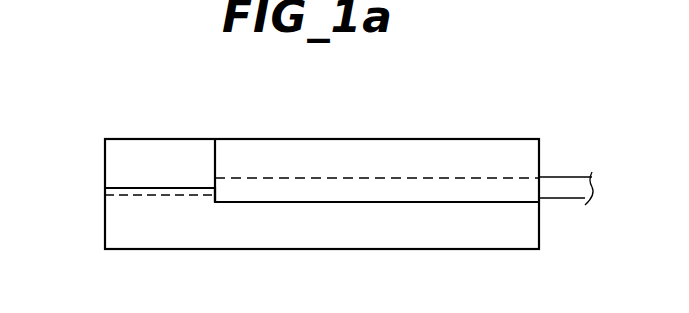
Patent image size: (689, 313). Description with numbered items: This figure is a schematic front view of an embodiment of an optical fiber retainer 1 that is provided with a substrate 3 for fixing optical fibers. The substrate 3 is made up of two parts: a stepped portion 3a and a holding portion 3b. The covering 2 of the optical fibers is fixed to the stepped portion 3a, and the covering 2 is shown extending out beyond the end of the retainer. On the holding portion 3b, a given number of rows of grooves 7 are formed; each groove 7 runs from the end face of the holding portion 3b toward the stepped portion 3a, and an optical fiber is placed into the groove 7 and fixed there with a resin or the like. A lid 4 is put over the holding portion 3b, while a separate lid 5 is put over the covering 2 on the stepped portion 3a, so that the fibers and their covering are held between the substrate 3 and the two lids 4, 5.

The optical fiber retainer 1 is at (518, 125).
The covering of optical fibers 2 is at (440, 185).
The substrate 3 is at (505, 233).
The stepped portion 3a is at (358, 203).
The holding portion 3b is at (176, 213).
The lid 4 is at (137, 153).
The lid 5 is at (300, 148).
The groove 7 is at (127, 193).